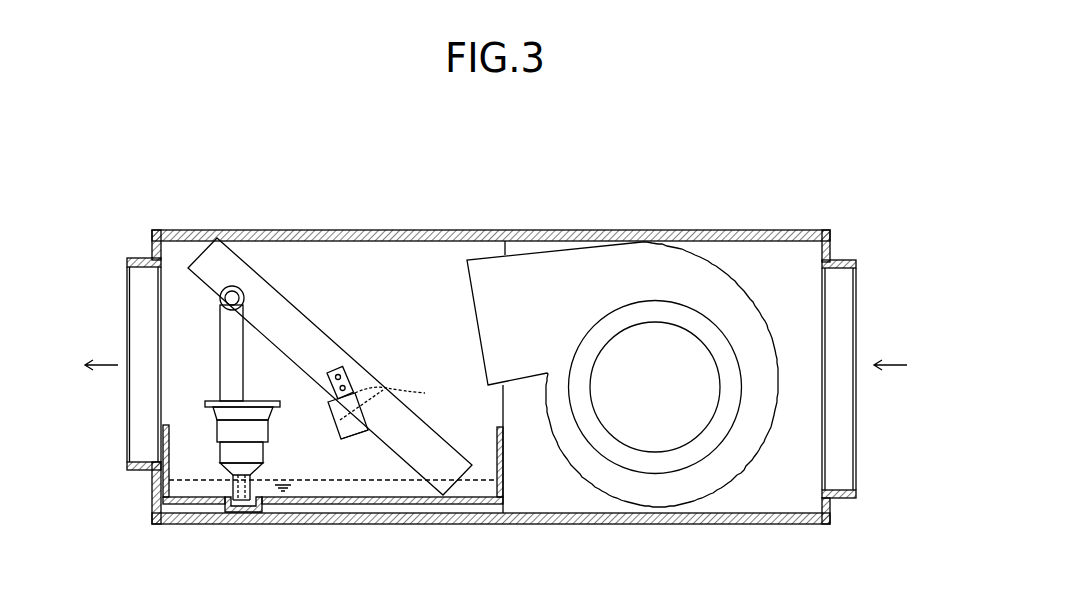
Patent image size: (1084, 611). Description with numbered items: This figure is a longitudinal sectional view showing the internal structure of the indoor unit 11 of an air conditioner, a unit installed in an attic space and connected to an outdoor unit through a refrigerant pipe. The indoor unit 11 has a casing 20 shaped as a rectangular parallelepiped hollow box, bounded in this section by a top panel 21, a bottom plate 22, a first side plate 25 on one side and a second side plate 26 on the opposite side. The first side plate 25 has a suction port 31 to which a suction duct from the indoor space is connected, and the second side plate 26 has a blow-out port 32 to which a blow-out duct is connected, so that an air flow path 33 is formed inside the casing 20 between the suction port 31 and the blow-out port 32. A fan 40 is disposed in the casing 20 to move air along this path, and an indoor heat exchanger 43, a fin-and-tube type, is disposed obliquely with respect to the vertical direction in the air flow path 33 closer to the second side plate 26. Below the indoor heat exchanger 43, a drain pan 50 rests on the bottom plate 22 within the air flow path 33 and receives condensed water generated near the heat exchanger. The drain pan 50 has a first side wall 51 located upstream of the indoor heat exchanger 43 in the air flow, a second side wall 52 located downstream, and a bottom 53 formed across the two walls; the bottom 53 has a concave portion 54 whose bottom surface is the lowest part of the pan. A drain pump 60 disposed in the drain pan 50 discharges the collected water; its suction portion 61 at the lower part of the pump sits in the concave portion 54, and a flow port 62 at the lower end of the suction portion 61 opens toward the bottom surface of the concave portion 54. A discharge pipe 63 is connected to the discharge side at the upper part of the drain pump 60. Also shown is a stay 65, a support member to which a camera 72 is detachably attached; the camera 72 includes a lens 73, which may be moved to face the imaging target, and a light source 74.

The indoor unit 11 is at (709, 196).
The casing 20 is at (442, 229).
The top panel 21 is at (328, 229).
The bottom plate 22 is at (655, 524).
The first side plate 25 is at (832, 245).
The second side plate 26 is at (150, 241).
The suction port 31 is at (838, 310).
The blow-out port 32 is at (127, 430).
The air flow path 33 is at (385, 258).
The fan 40 is at (578, 478).
The indoor heat exchanger 43 is at (331, 340).
The drain pan 50 is at (333, 491).
The first side wall 51 is at (494, 427).
The second side wall 52 is at (170, 426).
The bottom 53 is at (362, 497).
The concave portion 54 is at (253, 494).
The drain pump 60 is at (244, 415).
The suction portion 61 is at (236, 503).
The flow port 62 is at (242, 504).
The discharge pipe 63 is at (219, 322).
The stay 65 is at (375, 445).
The camera 72 is at (345, 438).
The lens 73 is at (360, 388).
The light source 74 is at (400, 392).